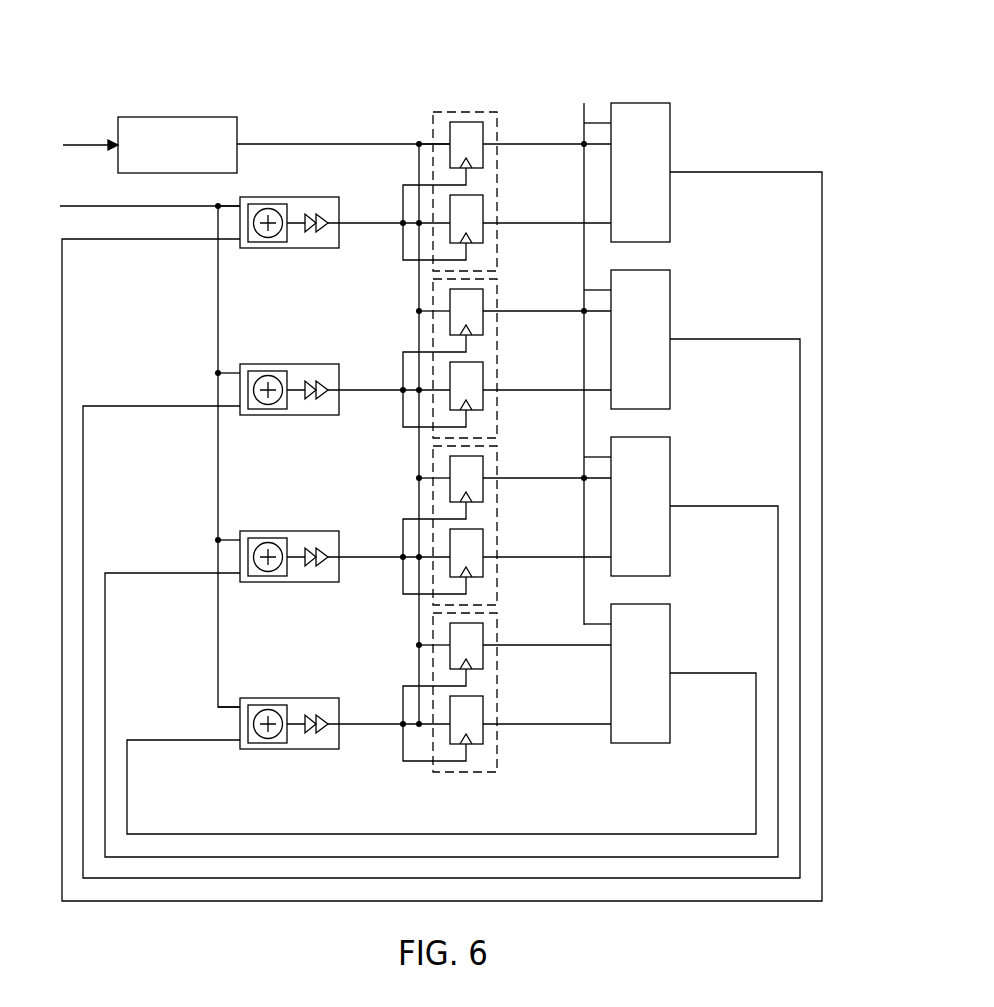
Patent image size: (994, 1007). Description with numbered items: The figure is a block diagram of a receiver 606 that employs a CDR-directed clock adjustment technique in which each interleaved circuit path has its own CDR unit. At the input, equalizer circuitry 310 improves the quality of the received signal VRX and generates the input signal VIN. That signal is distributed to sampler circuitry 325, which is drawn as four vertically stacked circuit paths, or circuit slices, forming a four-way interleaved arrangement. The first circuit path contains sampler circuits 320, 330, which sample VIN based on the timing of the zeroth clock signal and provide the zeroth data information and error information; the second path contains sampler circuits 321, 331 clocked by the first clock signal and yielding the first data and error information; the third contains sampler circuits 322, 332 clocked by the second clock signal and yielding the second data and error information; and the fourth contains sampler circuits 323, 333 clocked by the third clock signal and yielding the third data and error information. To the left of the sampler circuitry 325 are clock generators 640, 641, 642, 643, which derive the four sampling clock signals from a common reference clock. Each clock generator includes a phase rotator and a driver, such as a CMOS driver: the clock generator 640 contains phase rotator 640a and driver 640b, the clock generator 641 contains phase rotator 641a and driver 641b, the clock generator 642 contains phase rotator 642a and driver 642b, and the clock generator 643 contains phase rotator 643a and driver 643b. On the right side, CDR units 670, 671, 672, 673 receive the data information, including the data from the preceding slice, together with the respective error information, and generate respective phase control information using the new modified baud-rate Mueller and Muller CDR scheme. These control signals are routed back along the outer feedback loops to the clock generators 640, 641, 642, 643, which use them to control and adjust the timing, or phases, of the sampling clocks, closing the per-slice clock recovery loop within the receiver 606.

The receiver 606 is at (441, 454).
The equalizer circuitry 310 is at (180, 117).
The sampler circuit 320 is at (484, 160).
The sampler circuit 321 is at (530, 315).
The sampler circuit 322 is at (530, 482).
The sampler circuit 323 is at (530, 649).
The sampler circuit 330 is at (484, 233).
The sampler circuit 331 is at (530, 388).
The sampler circuit 332 is at (530, 555).
The sampler circuit 333 is at (530, 722).
The sampler circuitry 325 is at (433, 664).
The clock generator 640 is at (320, 212).
The phase rotator 640a is at (268, 204).
The driver 640b is at (320, 228).
The clock generator 641 is at (320, 379).
The phase rotator 641a is at (268, 367).
The driver 641b is at (353, 407).
The clock generator 642 is at (320, 546).
The phase rotator 642a is at (268, 534).
The driver 642b is at (353, 574).
The clock generator 643 is at (320, 713).
The phase rotator 643a is at (268, 701).
The driver 643b is at (353, 741).
The CDR unit 670 is at (640, 103).
The CDR unit 671 is at (642, 327).
The CDR unit 672 is at (642, 494).
The CDR unit 673 is at (642, 661).